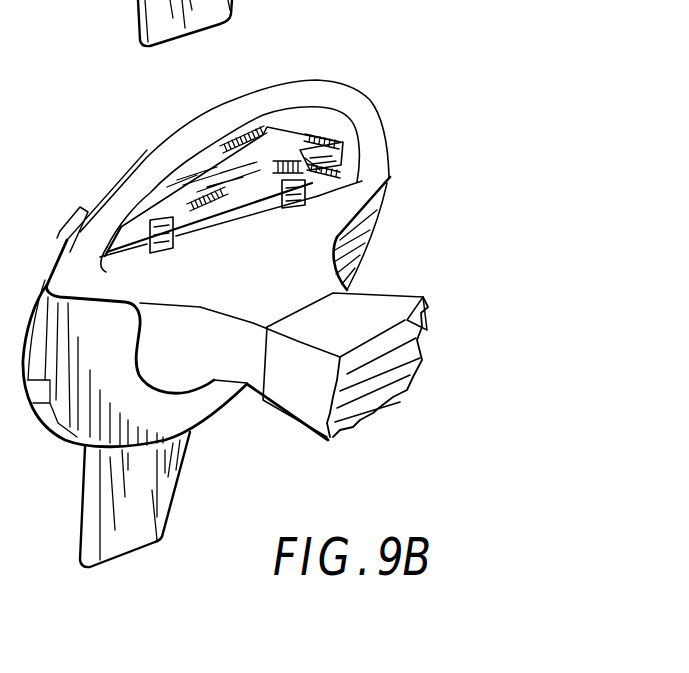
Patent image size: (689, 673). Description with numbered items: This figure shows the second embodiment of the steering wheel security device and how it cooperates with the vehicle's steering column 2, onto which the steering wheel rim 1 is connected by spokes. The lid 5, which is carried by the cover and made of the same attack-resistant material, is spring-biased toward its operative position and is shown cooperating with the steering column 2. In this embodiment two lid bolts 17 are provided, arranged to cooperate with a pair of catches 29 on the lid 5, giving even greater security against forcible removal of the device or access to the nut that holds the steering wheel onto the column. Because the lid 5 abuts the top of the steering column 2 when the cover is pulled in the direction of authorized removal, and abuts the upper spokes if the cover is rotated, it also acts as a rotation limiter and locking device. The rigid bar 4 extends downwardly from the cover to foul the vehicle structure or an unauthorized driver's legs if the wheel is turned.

The steering wheel rim 1 is at (390, 135).
The steering column 2 is at (373, 312).
The rigid bar 4 is at (123, 543).
The lid 5 is at (77, 212).
The lock bolt 17 is at (345, 184).
The catch 29 is at (330, 137).